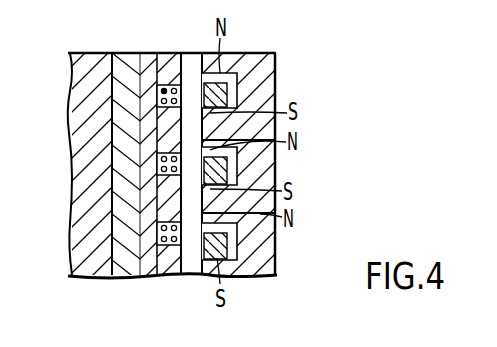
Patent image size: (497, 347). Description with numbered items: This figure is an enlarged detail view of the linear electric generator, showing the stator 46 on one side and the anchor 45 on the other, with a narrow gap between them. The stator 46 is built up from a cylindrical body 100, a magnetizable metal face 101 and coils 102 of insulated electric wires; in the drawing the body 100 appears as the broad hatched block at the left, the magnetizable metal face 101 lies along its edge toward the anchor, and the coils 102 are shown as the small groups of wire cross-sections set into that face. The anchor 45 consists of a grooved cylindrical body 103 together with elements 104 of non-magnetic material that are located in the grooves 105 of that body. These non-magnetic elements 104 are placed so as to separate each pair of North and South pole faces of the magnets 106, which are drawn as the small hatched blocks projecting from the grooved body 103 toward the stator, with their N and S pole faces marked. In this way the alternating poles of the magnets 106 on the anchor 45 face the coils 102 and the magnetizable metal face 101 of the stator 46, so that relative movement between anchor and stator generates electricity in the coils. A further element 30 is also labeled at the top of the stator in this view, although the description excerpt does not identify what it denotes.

The housing wall 30 is at (98, 53).
The anchor 45 is at (285, 70).
The stator 46 is at (105, 136).
The cylindrical body 100 is at (118, 182).
The magnetizable metal face 101 is at (148, 261).
The coils 102 is at (164, 91).
The grooved cylindrical body 103 is at (255, 234).
The elements of non-magnetic material 104 is at (199, 250).
The grooves 105 is at (255, 264).
The magnets 106 is at (236, 157).